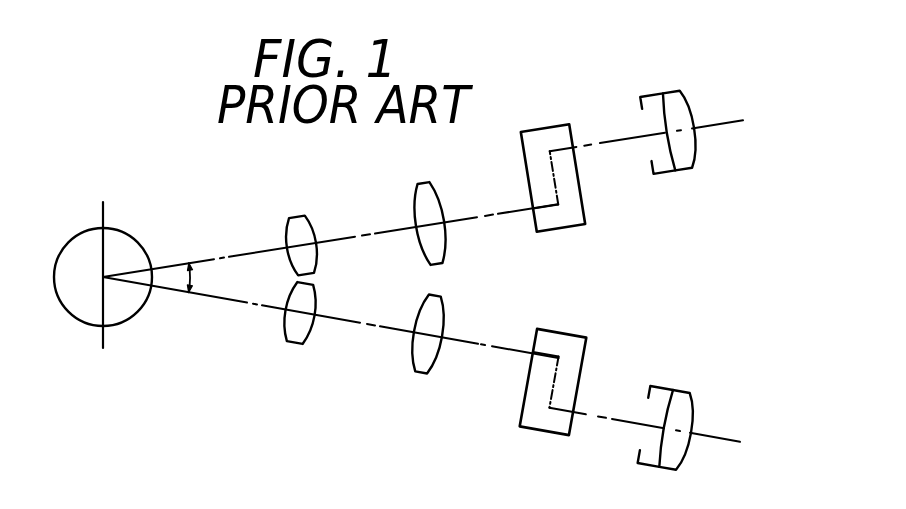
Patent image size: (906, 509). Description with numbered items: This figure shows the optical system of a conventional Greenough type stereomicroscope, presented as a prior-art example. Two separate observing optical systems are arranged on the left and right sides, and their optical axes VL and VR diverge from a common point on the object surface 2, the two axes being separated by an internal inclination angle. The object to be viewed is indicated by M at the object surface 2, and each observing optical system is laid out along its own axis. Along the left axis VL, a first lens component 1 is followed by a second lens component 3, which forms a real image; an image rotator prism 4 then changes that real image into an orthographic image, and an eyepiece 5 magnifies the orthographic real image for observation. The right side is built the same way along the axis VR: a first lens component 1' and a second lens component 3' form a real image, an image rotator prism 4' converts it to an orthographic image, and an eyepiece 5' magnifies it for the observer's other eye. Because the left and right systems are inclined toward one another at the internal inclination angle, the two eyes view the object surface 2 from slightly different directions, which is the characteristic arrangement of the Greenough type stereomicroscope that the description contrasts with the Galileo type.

The first lens component 1 is at (301, 220).
The first lens component 1' is at (300, 337).
The object surface 2 is at (104, 211).
The second lens component 3 is at (429, 198).
The second lens component 3' is at (428, 360).
The image rotator prism 4 is at (562, 152).
The image rotator prism 4' is at (559, 411).
The eyepiece 5 is at (670, 109).
The eyepiece 5' is at (667, 447).
The object M is at (137, 316).
The optical axis of left observing optical system VL is at (237, 251).
The optical axis of right observing optical system VR is at (231, 303).